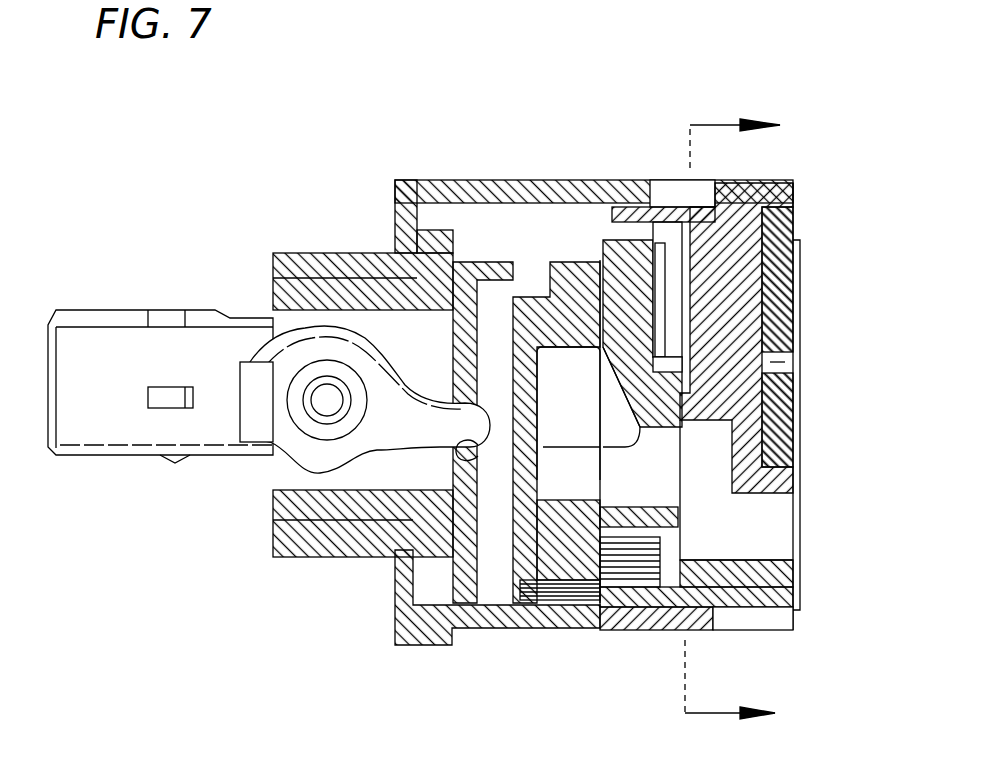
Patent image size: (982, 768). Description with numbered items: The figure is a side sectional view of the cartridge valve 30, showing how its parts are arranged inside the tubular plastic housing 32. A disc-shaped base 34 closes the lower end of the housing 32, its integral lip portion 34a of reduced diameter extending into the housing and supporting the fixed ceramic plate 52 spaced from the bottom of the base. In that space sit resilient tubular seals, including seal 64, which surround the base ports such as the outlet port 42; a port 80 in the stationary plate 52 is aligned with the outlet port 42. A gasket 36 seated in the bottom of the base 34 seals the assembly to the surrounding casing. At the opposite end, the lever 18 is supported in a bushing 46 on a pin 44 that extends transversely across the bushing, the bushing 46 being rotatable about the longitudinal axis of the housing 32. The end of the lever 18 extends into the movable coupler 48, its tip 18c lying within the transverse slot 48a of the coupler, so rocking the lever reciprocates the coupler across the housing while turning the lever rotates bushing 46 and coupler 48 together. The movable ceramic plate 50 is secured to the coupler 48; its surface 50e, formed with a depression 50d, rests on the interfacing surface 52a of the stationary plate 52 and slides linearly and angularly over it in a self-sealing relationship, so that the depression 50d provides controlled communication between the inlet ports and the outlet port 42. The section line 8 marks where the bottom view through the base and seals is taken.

The section line 8- 8 is at (732, 407).
The lever 18 is at (105, 420).
The tip of the lever 18c is at (450, 432).
The cartridge valve 30 is at (197, 238).
The housing 32 is at (490, 176).
The base 34 is at (735, 295).
The lip portion 34a is at (668, 210).
The gasket 36 is at (767, 325).
The outlet port 42 is at (760, 528).
The pin 44 is at (322, 393).
The bushing 46 is at (340, 300).
The movable coupler 48 is at (462, 500).
The transverse slot 48a is at (462, 460).
The movable ceramic plate 50 is at (575, 273).
The depression 50d is at (545, 540).
The surface of movable plate 50e is at (640, 500).
The fixed ceramic plate 52 is at (628, 270).
The interfacing surface 52a is at (598, 520).
The resilient tubular seal 64 is at (703, 557).
The port 80 is at (670, 540).